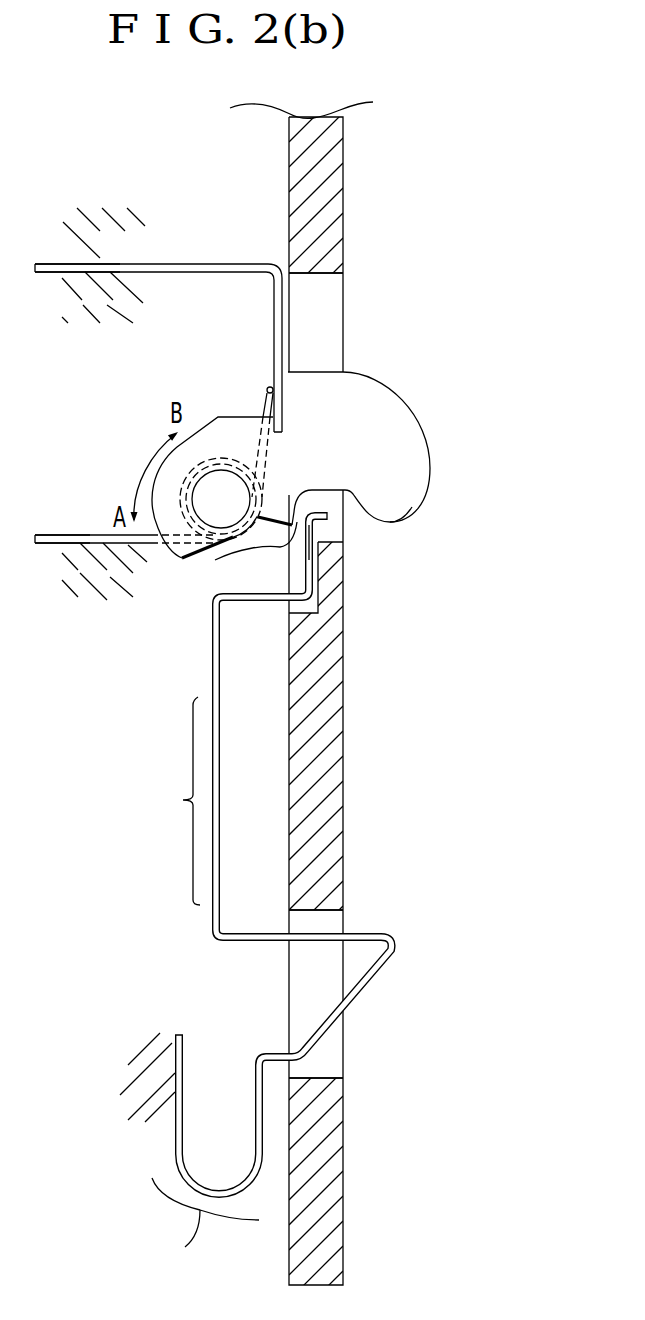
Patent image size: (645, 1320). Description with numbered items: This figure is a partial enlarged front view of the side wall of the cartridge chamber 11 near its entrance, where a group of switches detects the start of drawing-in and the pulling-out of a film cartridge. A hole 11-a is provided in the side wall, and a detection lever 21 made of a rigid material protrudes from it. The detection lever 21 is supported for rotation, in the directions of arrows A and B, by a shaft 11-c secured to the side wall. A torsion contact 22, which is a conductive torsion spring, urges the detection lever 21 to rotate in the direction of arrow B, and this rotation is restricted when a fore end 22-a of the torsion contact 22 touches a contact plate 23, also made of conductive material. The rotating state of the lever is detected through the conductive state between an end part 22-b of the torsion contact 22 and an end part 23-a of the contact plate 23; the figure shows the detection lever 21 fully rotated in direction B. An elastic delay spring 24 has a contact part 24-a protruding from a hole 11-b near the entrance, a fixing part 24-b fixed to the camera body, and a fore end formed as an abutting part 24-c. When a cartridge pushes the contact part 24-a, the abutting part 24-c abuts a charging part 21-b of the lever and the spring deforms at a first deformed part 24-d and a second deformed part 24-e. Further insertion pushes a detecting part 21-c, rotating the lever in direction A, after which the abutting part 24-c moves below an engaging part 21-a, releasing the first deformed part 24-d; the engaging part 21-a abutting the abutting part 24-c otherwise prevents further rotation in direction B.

The cartridge chamber 11 is at (293, 171).
The hole 11-a is at (332, 290).
The hole 11-b is at (332, 1058).
The shaft 11-c is at (221, 484).
The detection lever 21 is at (305, 470).
The engaging part 21-a is at (215, 560).
The charging part 21-b is at (299, 524).
The detecting part 21-c is at (397, 523).
The torsion contact 22 is at (45, 545).
The fore end 22-a is at (270, 387).
The end part 22-b is at (34, 537).
The contact plate 23 is at (203, 263).
The end part 23-a is at (34, 263).
The delay spring 24 is at (272, 898).
The contact part 24-a is at (403, 943).
The fixing part 24-b is at (185, 1062).
The abutting part 24-c is at (328, 517).
The first deformed part 24-d is at (183, 800).
The second deformed part 24-e is at (205, 1231).